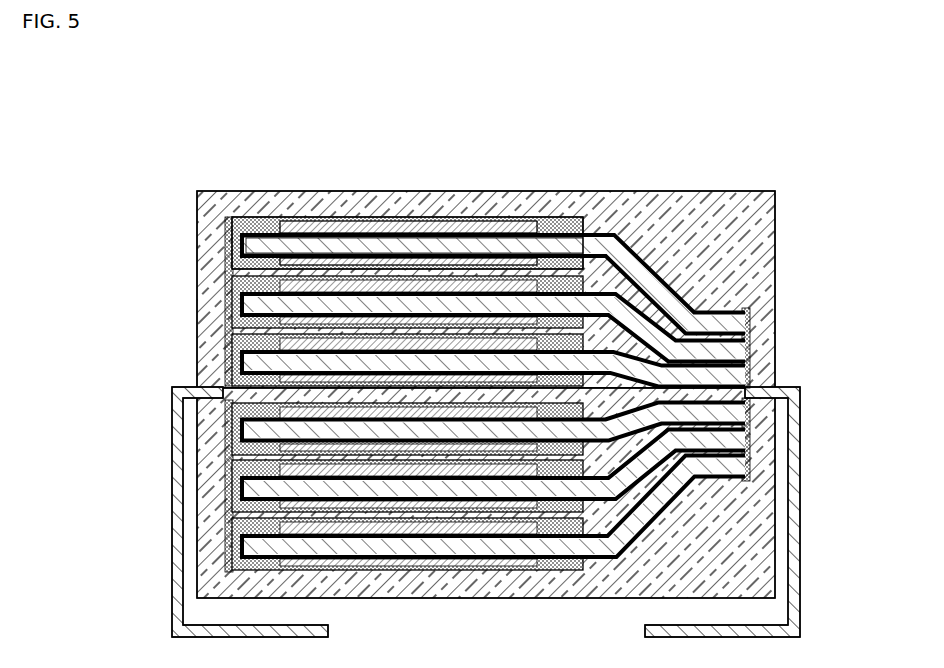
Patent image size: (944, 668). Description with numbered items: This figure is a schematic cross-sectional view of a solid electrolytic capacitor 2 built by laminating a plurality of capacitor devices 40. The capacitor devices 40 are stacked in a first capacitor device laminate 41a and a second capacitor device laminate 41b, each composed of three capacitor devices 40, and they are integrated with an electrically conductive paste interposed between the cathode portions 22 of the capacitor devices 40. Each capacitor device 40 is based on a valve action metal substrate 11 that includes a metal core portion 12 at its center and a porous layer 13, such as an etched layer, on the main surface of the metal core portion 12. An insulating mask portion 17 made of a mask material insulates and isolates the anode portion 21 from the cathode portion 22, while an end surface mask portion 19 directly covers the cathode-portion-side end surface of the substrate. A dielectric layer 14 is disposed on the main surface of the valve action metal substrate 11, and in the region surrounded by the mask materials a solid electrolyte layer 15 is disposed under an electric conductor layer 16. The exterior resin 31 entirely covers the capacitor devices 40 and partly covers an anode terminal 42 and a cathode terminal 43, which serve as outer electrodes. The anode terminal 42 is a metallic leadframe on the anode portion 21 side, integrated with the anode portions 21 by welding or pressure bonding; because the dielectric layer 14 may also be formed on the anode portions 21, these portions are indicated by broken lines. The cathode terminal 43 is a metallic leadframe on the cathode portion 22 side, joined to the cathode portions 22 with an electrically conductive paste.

The solid electrolytic capacitor 2 is at (459, 364).
The valve action metal substrate 11 is at (415, 182).
The metal core portion 12 is at (525, 238).
The porous layer 13 is at (490, 232).
The dielectric layer 14 is at (420, 245).
The solid electrolyte layer 15 is at (352, 240).
The electric conductor layer 16 is at (300, 236).
The insulating mask portion 17 is at (578, 224).
The end surface mask portion 19 is at (252, 228).
The anode portion 21 is at (616, 224).
The cathode portion 22 is at (234, 211).
The exterior resin 31 is at (757, 248).
The capacitor device 40 is at (397, 363).
The first capacitor device laminate 41a is at (110, 205).
The second capacitor device laminate 41b is at (397, 513).
The anode terminal 42 is at (488, 512).
The cathode terminal 43 is at (178, 440).